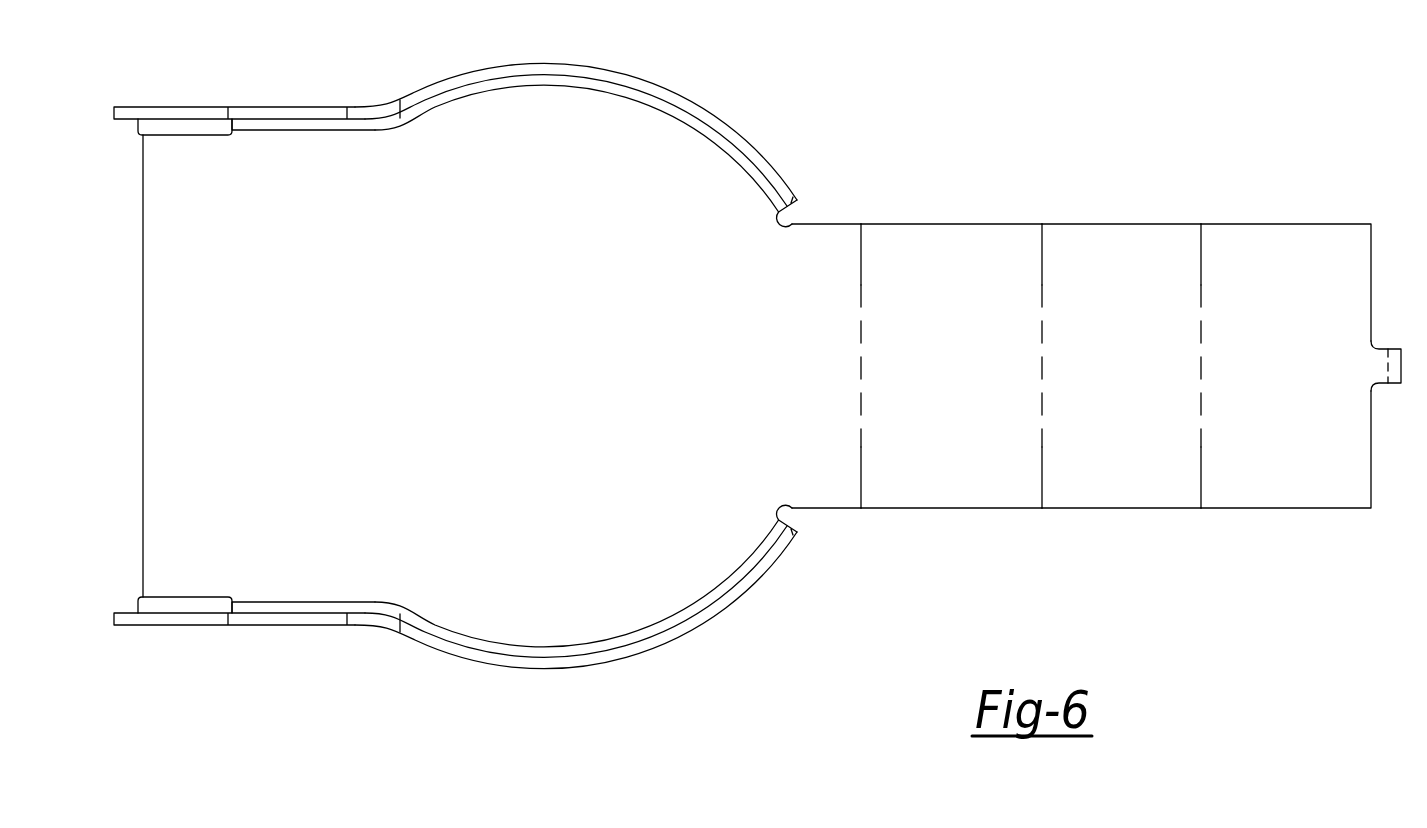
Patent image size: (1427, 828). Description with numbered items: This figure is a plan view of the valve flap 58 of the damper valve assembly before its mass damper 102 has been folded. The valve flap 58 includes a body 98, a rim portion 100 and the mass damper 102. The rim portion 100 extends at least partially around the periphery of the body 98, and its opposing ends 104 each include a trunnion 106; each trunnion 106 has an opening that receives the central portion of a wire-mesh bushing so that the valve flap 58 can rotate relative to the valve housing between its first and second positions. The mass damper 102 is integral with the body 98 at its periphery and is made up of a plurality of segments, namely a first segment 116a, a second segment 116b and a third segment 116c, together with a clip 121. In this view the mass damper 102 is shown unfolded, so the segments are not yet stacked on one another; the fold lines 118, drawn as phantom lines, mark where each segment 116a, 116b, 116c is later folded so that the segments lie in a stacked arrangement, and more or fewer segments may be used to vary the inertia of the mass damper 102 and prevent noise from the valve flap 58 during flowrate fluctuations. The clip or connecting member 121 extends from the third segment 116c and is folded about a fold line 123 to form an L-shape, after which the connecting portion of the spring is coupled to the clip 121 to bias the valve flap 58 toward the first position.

The valve flap 58 is at (807, 87).
The body 98 is at (527, 120).
The rim portion 100 is at (631, 82).
The mass damper 102 is at (1075, 163).
The opposing ends 104 is at (251, 110).
The trunnion 106 is at (208, 131).
The first segment 116a is at (938, 257).
The second segment 116b is at (1118, 255).
The third segment 116c is at (1270, 255).
The fold lines 118 is at (863, 326).
The clip 121 is at (1395, 347).
The fold line 123 is at (1399, 388).